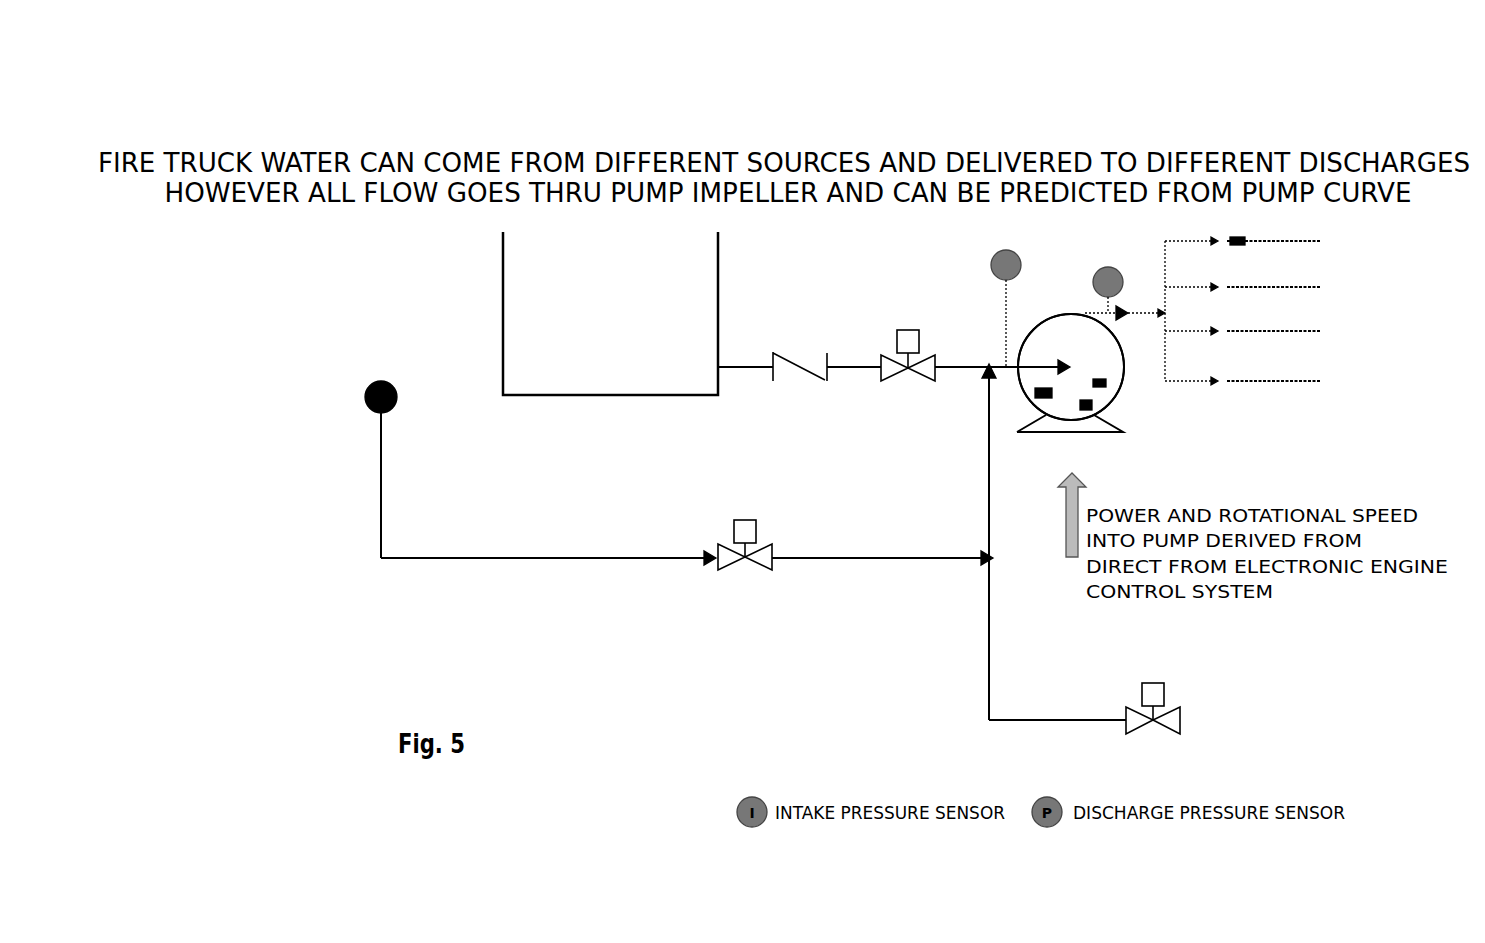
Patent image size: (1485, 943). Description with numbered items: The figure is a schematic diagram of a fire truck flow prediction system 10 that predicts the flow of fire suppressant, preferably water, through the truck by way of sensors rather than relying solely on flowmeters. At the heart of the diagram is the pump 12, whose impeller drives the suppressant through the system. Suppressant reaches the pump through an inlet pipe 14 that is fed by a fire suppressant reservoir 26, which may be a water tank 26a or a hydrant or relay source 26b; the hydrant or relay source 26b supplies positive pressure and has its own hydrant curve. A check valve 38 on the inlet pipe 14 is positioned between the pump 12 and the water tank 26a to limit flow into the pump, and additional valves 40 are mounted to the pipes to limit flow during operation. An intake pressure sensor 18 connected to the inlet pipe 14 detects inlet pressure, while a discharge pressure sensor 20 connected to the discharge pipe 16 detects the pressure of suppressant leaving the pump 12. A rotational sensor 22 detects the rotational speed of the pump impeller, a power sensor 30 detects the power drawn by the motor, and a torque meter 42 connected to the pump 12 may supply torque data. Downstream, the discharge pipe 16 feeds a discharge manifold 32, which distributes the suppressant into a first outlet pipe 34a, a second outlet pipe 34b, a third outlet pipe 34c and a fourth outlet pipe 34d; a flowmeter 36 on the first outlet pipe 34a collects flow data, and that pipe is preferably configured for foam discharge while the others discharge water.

The fire truck flow prediction system 10 is at (338, 311).
The pump 12 is at (1053, 322).
The inlet pipe 14 is at (1010, 355).
The discharge pipe 16 is at (1077, 313).
The intake pressure sensor 18 is at (1006, 297).
The discharge pressure sensor 20 is at (1110, 278).
The rotational sensor 22 is at (1093, 414).
The fire suppressant reservoir 26 is at (348, 359).
The water tank 26a is at (530, 325).
The hydrant or relay source 26b is at (453, 485).
The power sensor 30 is at (1100, 388).
The discharge manifold 32 is at (1219, 336).
The first outlet pipe 34a is at (1292, 241).
The second outlet pipe 34b is at (1303, 287).
The third outlet pipe 34c is at (1303, 331).
The fourth outlet pipe 34d is at (1303, 381).
The flowmeter 36 is at (1243, 239).
The check valve 38 is at (800, 366).
The valves 40 is at (893, 366).
The torque meter 42 is at (1043, 400).